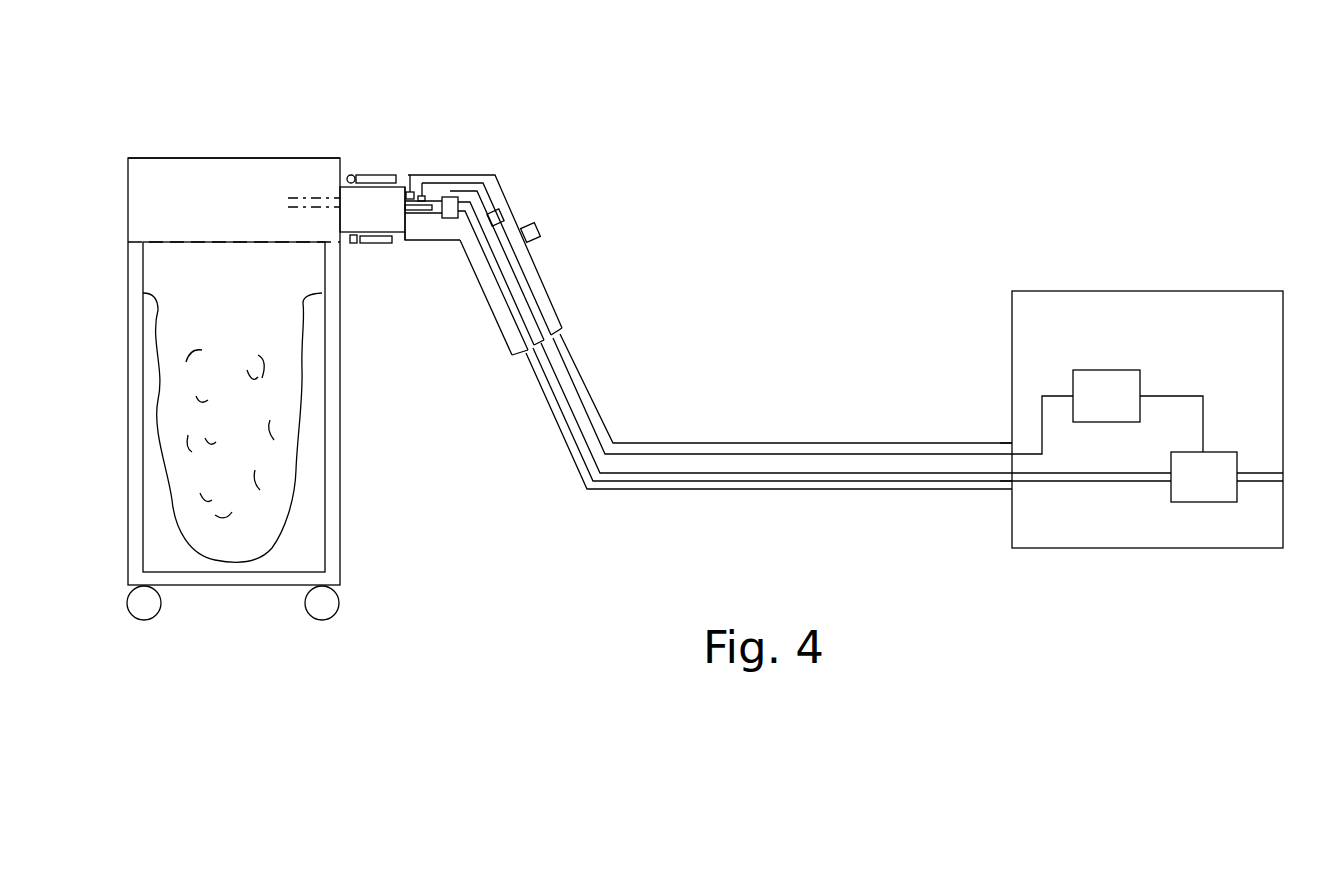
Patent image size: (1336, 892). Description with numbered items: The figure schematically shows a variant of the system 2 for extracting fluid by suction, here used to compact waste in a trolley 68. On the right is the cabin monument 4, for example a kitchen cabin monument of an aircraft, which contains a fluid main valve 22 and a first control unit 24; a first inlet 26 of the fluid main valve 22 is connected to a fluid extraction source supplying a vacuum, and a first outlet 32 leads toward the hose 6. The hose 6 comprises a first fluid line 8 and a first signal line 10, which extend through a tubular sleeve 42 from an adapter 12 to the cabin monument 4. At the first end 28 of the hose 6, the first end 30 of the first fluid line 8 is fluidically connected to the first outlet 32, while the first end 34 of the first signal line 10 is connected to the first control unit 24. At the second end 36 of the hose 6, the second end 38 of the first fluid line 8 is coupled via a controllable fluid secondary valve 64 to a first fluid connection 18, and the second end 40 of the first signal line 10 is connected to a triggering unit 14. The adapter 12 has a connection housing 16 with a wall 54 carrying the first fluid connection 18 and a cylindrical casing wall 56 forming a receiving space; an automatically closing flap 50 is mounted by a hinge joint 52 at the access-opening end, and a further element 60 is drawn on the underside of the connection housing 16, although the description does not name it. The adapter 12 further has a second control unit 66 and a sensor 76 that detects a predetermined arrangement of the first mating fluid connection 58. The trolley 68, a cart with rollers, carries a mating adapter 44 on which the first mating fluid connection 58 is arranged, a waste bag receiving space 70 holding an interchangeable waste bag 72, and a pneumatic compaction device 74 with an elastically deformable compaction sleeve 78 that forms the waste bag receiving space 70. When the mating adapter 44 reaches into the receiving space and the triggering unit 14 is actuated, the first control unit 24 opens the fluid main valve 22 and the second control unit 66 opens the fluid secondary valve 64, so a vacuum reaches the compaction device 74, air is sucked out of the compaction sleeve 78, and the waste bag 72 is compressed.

The system 2 is at (941, 140).
The cabin monument 4 is at (1172, 382).
The hose 6 is at (848, 446).
The first fluid line 8 is at (771, 486).
The first signal line 10 is at (813, 394).
The adapter 12 is at (440, 213).
The triggering unit 14 is at (540, 225).
The connection housing 16 is at (400, 170).
The first fluid connection 18 is at (422, 230).
The fluid main valve 22 is at (1204, 477).
The first control unit 24 is at (1106, 396).
The first inlet 26 is at (1246, 463).
The first end of the hose 28 is at (1005, 438).
The first end of the first fluid line 30 is at (1006, 490).
The first outlet 32 is at (1163, 502).
The first end of the first signal line 34 is at (1005, 462).
The second end of the hose 36 is at (575, 331).
The second end of the first fluid line 38 is at (522, 358).
The second end of the first signal line 40 is at (542, 349).
The tubular sleeve 42 is at (736, 438).
The mating adapter 44 is at (372, 209).
The flap 50 is at (393, 170).
The hinge joint 52 is at (352, 168).
The wall 54 is at (407, 240).
The casing wall 56 is at (390, 249).
The first mating fluid connection 58 is at (412, 172).
The fastener 60 is at (375, 248).
The fluid secondary valve 64 is at (450, 228).
The second control unit 66 is at (503, 210).
The trolley 68 is at (177, 126).
The waste bag receiving space 70 is at (312, 394).
The waste bag 72 is at (302, 487).
The pneumatic compaction device 74 is at (132, 200).
The sensor 76 is at (428, 195).
The compaction sleeve 78 is at (331, 535).